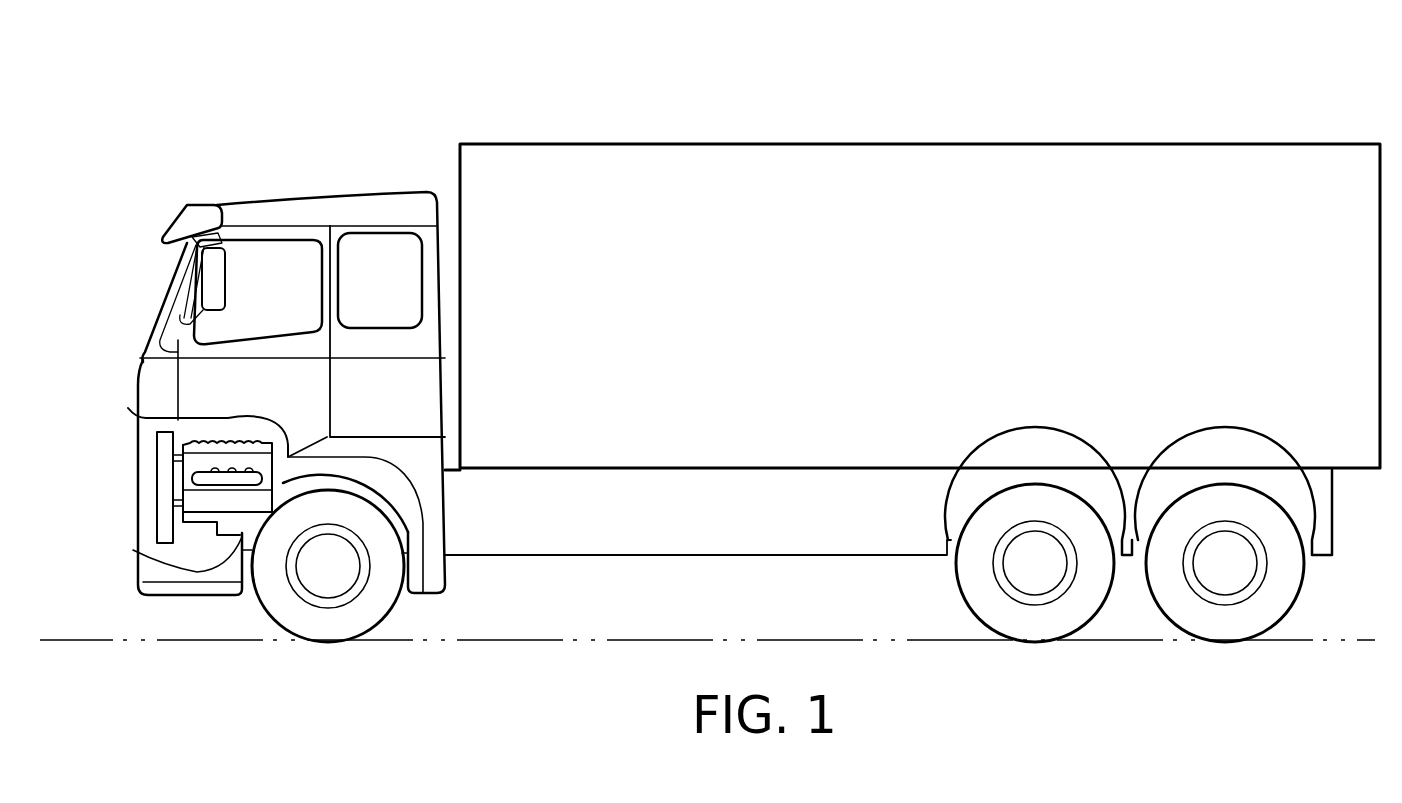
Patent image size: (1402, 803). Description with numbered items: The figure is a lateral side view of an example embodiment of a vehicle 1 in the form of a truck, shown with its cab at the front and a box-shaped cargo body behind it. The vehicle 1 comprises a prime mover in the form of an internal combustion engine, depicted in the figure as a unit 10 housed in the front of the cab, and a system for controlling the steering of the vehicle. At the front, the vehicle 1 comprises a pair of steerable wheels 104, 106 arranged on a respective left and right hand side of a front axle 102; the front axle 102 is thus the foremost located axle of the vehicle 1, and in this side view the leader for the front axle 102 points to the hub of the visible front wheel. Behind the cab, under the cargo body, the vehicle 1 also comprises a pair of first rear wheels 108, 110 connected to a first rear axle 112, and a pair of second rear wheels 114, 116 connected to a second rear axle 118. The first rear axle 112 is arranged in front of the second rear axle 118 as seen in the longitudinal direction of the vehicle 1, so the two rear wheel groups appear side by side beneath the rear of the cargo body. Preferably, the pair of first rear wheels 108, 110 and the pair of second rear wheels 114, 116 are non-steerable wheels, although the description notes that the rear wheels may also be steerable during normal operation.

The vehicle 1 is at (262, 110).
The drive unit / engine 10 is at (213, 499).
The front axle 102 is at (327, 565).
The steerable wheel 104 is at (295, 613).
The steerable wheel 106 is at (295, 613).
The first rear wheel 108 is at (1003, 612).
The first rear wheel 110 is at (1003, 612).
The first rear axle 112 is at (1036, 563).
The second rear wheel 114 is at (1193, 612).
The second rear wheel 116 is at (1193, 612).
The second rear axle 118 is at (1225, 563).